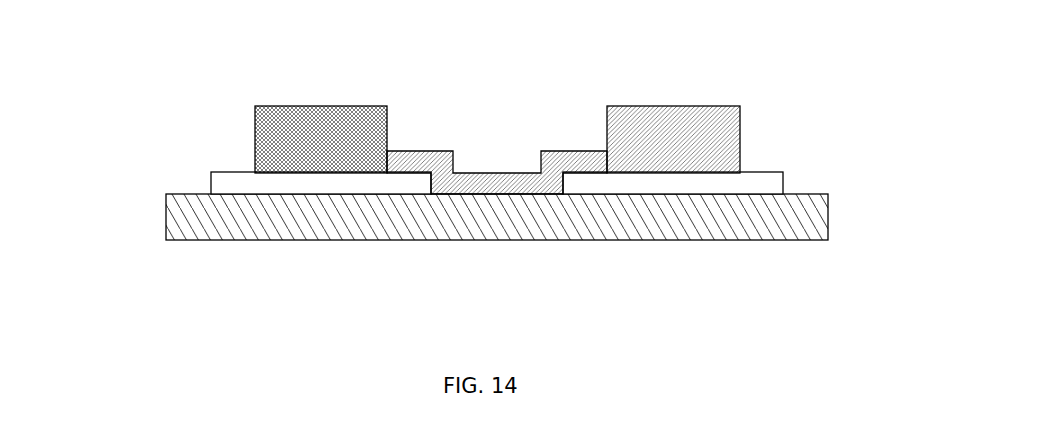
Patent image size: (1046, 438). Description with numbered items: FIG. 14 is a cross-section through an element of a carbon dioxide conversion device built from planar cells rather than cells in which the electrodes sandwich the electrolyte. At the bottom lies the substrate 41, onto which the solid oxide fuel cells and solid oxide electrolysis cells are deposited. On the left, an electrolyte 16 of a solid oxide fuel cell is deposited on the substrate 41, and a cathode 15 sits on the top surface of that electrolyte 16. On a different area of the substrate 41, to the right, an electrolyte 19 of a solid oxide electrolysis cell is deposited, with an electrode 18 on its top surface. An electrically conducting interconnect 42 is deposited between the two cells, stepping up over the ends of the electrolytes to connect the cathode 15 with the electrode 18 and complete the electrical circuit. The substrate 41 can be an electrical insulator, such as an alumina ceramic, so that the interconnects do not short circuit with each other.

The cathode 15 is at (283, 140).
The electrolyte 16 is at (222, 183).
The cathode 18 is at (712, 129).
The electrolyte 19 is at (767, 183).
The substrate 41 is at (210, 217).
The interconnect 42 is at (486, 182).